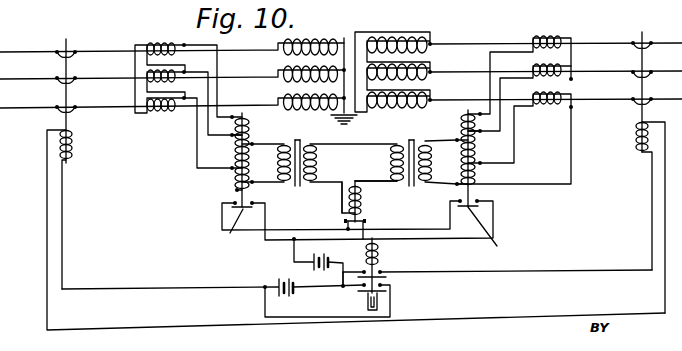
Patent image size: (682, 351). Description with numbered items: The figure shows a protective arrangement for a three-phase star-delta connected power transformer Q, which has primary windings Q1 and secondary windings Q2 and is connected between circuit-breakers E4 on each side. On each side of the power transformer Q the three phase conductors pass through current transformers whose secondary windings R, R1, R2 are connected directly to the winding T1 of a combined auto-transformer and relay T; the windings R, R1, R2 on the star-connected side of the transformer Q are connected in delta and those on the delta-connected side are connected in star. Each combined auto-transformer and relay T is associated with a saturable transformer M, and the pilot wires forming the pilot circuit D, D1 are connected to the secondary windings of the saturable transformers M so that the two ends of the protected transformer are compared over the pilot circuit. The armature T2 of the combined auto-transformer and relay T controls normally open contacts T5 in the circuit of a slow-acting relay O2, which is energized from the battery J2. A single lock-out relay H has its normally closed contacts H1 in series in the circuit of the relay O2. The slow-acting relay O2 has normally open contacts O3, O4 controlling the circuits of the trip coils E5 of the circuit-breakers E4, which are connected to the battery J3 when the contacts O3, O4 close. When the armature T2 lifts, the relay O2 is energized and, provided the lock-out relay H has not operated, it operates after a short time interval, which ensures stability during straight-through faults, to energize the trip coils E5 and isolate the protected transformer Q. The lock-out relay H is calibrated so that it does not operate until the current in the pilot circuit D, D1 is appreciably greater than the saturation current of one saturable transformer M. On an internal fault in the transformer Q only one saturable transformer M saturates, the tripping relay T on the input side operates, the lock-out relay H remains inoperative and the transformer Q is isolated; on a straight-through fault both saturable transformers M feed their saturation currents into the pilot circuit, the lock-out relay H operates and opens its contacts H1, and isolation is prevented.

The circuit-breaker E4 is at (66, 69).
The trip coil E5 is at (73, 150).
The power transformer Q is at (349, 45).
The primary windings Q1 is at (313, 144).
The secondary windings Q2 is at (392, 112).
The current transformer secondary winding R is at (147, 44).
The current transformer secondary winding R1 is at (147, 72).
The current transformer secondary winding R2 is at (161, 111).
The combined auto-transformer and relay T is at (244, 114).
The winding T1 is at (231, 166).
The armature T2 is at (362, 233).
The normally open contacts T5 is at (234, 203).
The saturable transformer M is at (368, 176).
The pilot circuit D is at (376, 167).
The pilot circuit D1 is at (355, 181).
The lock-out relay H is at (360, 201).
The normally closed contacts H1 is at (345, 222).
The battery J2 is at (300, 264).
The battery J3 is at (270, 292).
The slow-acting relay O2 is at (379, 253).
The normally open contacts O3 is at (386, 278).
The normally open contacts O4 is at (393, 291).